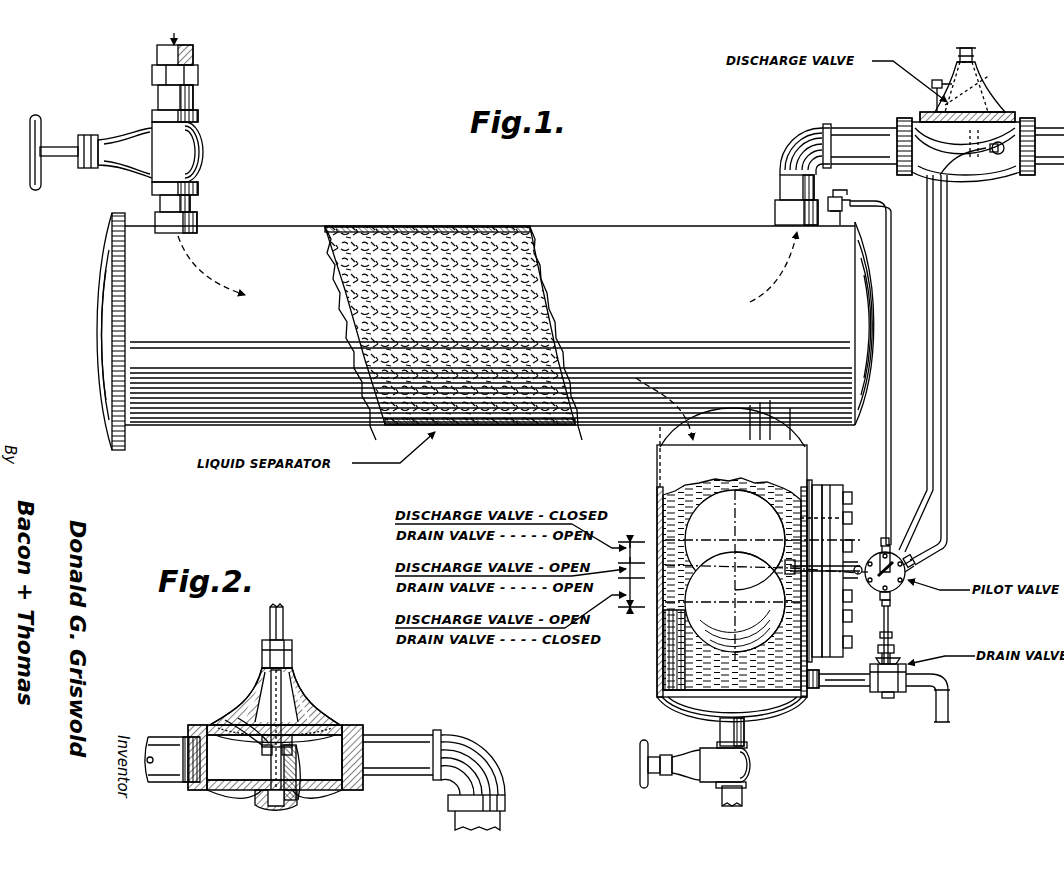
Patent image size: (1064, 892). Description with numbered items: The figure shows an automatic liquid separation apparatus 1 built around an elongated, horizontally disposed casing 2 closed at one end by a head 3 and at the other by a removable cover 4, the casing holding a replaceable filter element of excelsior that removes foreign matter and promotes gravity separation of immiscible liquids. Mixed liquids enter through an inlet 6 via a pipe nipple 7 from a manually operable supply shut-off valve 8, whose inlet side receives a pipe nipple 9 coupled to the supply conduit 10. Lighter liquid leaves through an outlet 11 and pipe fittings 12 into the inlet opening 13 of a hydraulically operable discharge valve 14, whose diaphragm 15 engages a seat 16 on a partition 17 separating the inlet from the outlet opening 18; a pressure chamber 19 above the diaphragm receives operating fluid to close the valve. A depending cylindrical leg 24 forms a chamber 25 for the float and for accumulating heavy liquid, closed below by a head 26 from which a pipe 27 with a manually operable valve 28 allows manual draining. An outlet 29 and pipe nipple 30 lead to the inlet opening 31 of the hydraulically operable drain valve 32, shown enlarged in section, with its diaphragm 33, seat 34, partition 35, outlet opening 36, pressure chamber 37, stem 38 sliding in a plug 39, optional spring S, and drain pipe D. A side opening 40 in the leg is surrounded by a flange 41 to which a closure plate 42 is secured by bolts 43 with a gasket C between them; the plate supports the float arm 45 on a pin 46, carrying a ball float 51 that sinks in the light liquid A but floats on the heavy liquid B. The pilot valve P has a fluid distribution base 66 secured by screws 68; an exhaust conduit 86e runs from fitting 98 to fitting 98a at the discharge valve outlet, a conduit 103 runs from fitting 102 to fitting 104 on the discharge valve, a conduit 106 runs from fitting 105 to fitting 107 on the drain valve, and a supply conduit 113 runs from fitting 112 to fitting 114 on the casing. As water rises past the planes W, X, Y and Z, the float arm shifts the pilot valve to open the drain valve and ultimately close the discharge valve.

In FIG. 1, the liquid separation apparatus 1 is at (673, 226).
In FIG. 1, the casing 2 is at (286, 226).
In FIG. 1, the head 3 is at (862, 310).
In FIG. 1, the removable cover 4 is at (100, 262).
In FIG. 1, the inlet 6 is at (200, 222).
In FIG. 1, the pipe nipple 7 is at (160, 203).
In FIG. 1, the supply shut-off valve 8 is at (203, 152).
In FIG. 1, the pipe nipple 9 is at (195, 100).
In FIG. 1, the supply conduit 10 is at (157, 55).
In FIG. 1, the outlet 11 is at (778, 208).
In FIG. 1, the pipe fittings 12 is at (806, 126).
In FIG. 1, the inlet opening 13 is at (948, 158).
In FIG. 1, the discharge valve 14 is at (976, 62).
In FIG. 1, the diaphragm 15 is at (990, 113).
In FIG. 1, the seat 16 is at (930, 112).
In FIG. 1, the partition 17 is at (980, 166).
In FIG. 1, the outlet opening 18 is at (1012, 160).
In FIG. 1, the pressure chamber 19 is at (988, 80).
In FIG. 1, the depending cylindrical leg 24 is at (657, 446).
In FIG. 1, the chamber 25 is at (690, 492).
In FIG. 1, the head 26 is at (670, 705).
In FIG. 1, the pipe 27 is at (744, 732).
In FIG. 1, the manually operable valve 28 is at (746, 762).
In FIG. 1, the outlet 29 is at (822, 688).
In FIG. 1, the pipe nipple 30 is at (850, 686).
In FIG. 2, the pipe nipple 30 is at (165, 737).
In FIG. 2, the inlet opening 31 is at (222, 786).
In FIG. 1, the drain valve 32 is at (903, 692).
In FIG. 2, the drain valve 32 is at (305, 682).
In FIG. 2, the diaphragm 33 is at (262, 712).
In FIG. 2, the seat 34 is at (265, 752).
In FIG. 2, the partition 35 is at (298, 756).
In FIG. 2, the outlet opening 36 is at (330, 785).
In FIG. 2, the pressure chamber 37 is at (298, 712).
In FIG. 2, the stem 38 is at (272, 785).
In FIG. 2, the plug 39 is at (280, 810).
In FIG. 1, the opening 40 is at (842, 518).
In FIG. 1, the flange 41 is at (816, 492).
In FIG. 1, the closure plate 42 is at (838, 486).
In FIG. 1, the bolts 43 is at (852, 497).
In FIG. 1, the float arm 45 is at (790, 578).
In FIG. 1, the pin 46 is at (859, 566).
In FIG. 1, the ball float 51 is at (660, 648).
In FIG. 1, the fluid distribution base 66 is at (876, 586).
In FIG. 1, the screws 68 is at (898, 588).
In FIG. 1, the exhaust conduit 86e is at (948, 392).
In FIG. 1, the fitting 98 is at (916, 560).
In FIG. 1, the fitting 98a is at (998, 160).
In FIG. 1, the fitting 102 is at (893, 556).
In FIG. 1, the conduit 103 is at (935, 314).
In FIG. 1, the fitting 104 is at (937, 80).
In FIG. 1, the fitting 105 is at (896, 605).
In FIG. 1, the conduit 106 is at (895, 640).
In FIG. 2, the conduit 106 is at (284, 622).
In FIG. 1, the fitting 107 is at (912, 655).
In FIG. 2, the fitting 107 is at (293, 654).
In FIG. 1, the fitting 112 is at (905, 528).
In FIG. 1, the supply conduit 113 is at (888, 295).
In FIG. 1, the fitting 114 is at (842, 200).
In FIG. 1, the light liquid A is at (670, 506).
In FIG. 1, the heavy liquid B is at (672, 665).
In FIG. 1, the flange C is at (828, 486).
In FIG. 1, the drain pipe D is at (948, 712).
In FIG. 2, the drain pipe D is at (504, 776).
In FIG. 1, the pilot valve P is at (908, 573).
In FIG. 2, the spring S is at (290, 810).
In FIG. 1, the line W is at (645, 610).
In FIG. 1, the line X is at (642, 596).
In FIG. 1, the line Y is at (642, 555).
In FIG. 1, the line Z is at (641, 546).